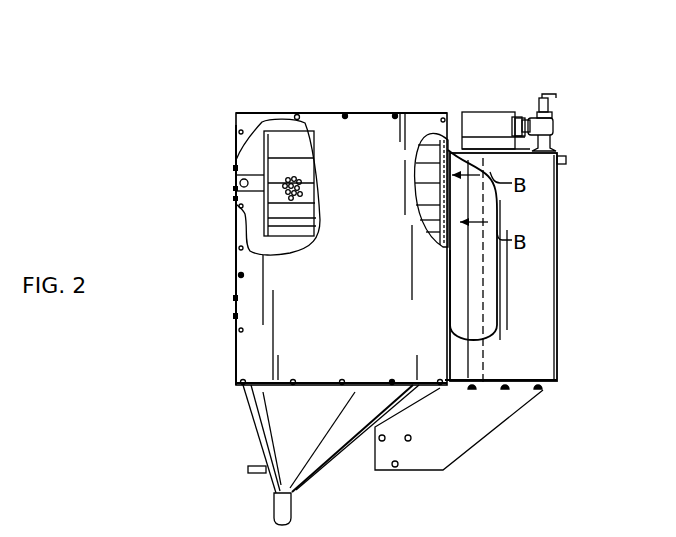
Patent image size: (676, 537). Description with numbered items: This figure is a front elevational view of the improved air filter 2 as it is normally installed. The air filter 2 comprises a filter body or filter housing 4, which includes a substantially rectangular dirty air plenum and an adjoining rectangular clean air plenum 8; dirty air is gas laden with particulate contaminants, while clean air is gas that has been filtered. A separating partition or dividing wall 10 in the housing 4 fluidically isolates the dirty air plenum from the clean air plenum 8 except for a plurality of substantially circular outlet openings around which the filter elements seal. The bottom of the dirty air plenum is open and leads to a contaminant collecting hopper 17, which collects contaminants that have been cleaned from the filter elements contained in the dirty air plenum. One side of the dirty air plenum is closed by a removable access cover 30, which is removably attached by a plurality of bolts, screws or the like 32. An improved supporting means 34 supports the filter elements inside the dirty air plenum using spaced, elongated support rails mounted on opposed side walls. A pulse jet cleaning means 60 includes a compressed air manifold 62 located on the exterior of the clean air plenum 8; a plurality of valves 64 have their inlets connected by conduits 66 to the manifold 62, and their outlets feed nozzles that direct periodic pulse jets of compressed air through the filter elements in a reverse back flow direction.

The air filter 2 is at (318, 96).
The filter housing 4 is at (368, 108).
The clean air plenum 8 is at (540, 224).
The dividing wall 10 is at (427, 138).
The contaminant collecting hopper 17 is at (262, 420).
The removable access cover 30 is at (352, 296).
The bolts 32 is at (245, 120).
The supporting means 34 is at (228, 248).
The pulse jet cleaning means 60 is at (533, 72).
The compressed air manifold 62 is at (488, 112).
The valve 64 is at (553, 127).
The conduit 66 is at (525, 113).